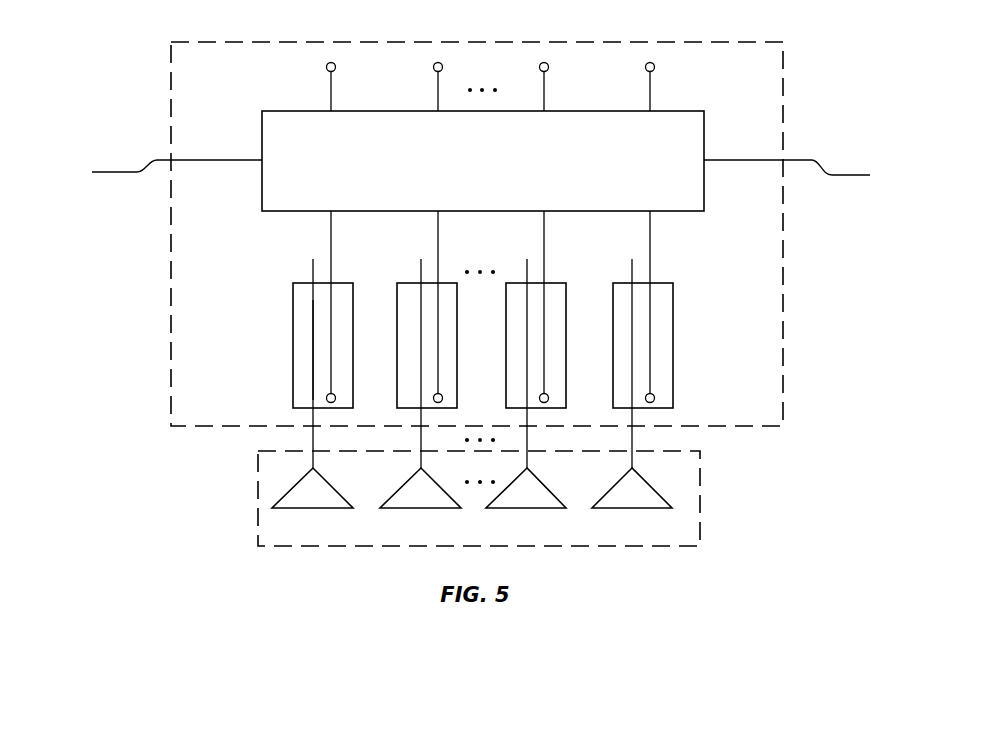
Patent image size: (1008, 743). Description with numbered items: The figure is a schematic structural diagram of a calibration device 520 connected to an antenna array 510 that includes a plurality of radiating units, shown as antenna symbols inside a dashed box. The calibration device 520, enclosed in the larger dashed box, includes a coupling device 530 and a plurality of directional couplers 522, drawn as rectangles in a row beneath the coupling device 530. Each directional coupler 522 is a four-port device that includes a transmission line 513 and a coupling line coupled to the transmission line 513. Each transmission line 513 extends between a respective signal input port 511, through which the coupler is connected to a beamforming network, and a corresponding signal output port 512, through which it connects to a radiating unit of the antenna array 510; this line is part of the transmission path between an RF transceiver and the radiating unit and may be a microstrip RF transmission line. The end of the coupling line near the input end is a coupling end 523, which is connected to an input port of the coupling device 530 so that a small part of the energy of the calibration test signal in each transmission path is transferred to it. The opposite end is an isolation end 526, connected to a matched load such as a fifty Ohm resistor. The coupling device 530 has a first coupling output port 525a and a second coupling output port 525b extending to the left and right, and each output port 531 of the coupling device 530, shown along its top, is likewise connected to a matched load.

The antenna array 510 is at (258, 498).
The signal input port 511 is at (313, 270).
The signal output port 512 is at (313, 436).
The transmission line 513 is at (313, 370).
The calibration device 520 is at (171, 52).
The directional coupler 522 is at (293, 345).
The coupling end 523 is at (331, 239).
The first coupling output port 525a is at (152, 177).
The second coupling output port 525b is at (811, 177).
The isolation end 526 is at (334, 402).
The coupling device 530 is at (262, 140).
The output port 531 is at (336, 66).